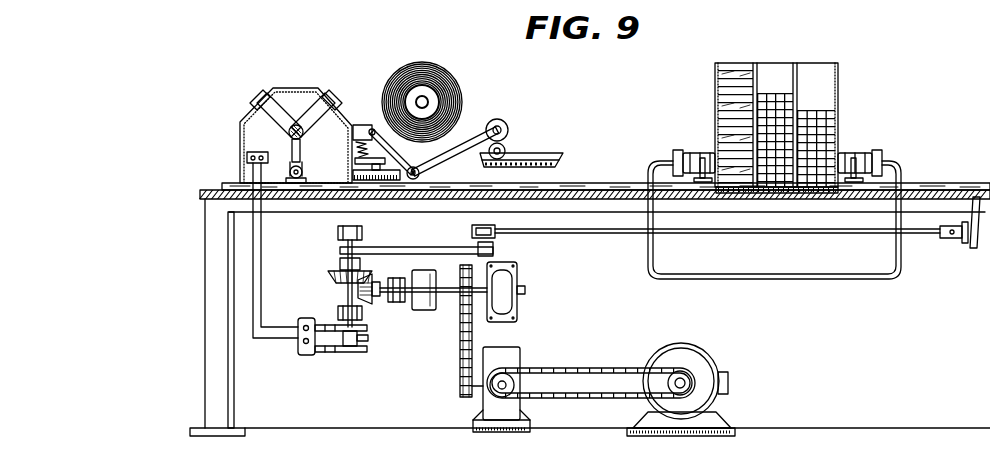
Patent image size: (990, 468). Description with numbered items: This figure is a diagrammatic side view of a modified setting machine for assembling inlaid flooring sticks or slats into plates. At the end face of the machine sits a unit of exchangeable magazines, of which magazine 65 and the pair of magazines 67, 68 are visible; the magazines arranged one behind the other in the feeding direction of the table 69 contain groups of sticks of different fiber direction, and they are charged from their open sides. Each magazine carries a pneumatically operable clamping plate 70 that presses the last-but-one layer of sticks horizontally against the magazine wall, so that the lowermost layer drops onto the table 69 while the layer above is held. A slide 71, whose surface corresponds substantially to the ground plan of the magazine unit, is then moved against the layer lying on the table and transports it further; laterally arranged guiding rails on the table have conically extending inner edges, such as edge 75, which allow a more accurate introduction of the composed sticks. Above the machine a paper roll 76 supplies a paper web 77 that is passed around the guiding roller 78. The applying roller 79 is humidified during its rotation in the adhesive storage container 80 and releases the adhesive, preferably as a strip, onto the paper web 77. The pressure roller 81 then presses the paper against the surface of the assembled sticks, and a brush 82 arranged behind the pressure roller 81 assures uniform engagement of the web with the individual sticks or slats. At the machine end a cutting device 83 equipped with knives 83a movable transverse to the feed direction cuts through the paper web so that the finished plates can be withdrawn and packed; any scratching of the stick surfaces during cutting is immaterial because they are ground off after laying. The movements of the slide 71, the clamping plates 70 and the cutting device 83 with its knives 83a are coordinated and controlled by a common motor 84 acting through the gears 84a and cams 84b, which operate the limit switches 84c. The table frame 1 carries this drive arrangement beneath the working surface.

The table bed 1 is at (584, 188).
The magazine 65 is at (781, 111).
The magazine 67 is at (718, 75).
The magazine 68 is at (839, 75).
The table 69 is at (790, 193).
The clamping plate 70 is at (708, 184).
The slide 71 is at (942, 186).
The conically extending inner edge 75 is at (672, 181).
The paper roll 76 is at (398, 73).
The paper web 77 is at (470, 126).
The guiding roller 78 is at (503, 121).
The applying roller 79 is at (505, 147).
The adhesive storage container 80 is at (541, 153).
The pressure roller 81 is at (420, 168).
The brush 82 is at (370, 184).
The cutting device 83 is at (262, 100).
The knives 83a is at (293, 188).
The motor 84 is at (700, 364).
The gears 84a is at (516, 358).
The cams 84b is at (362, 342).
The limit switches 84c is at (311, 356).